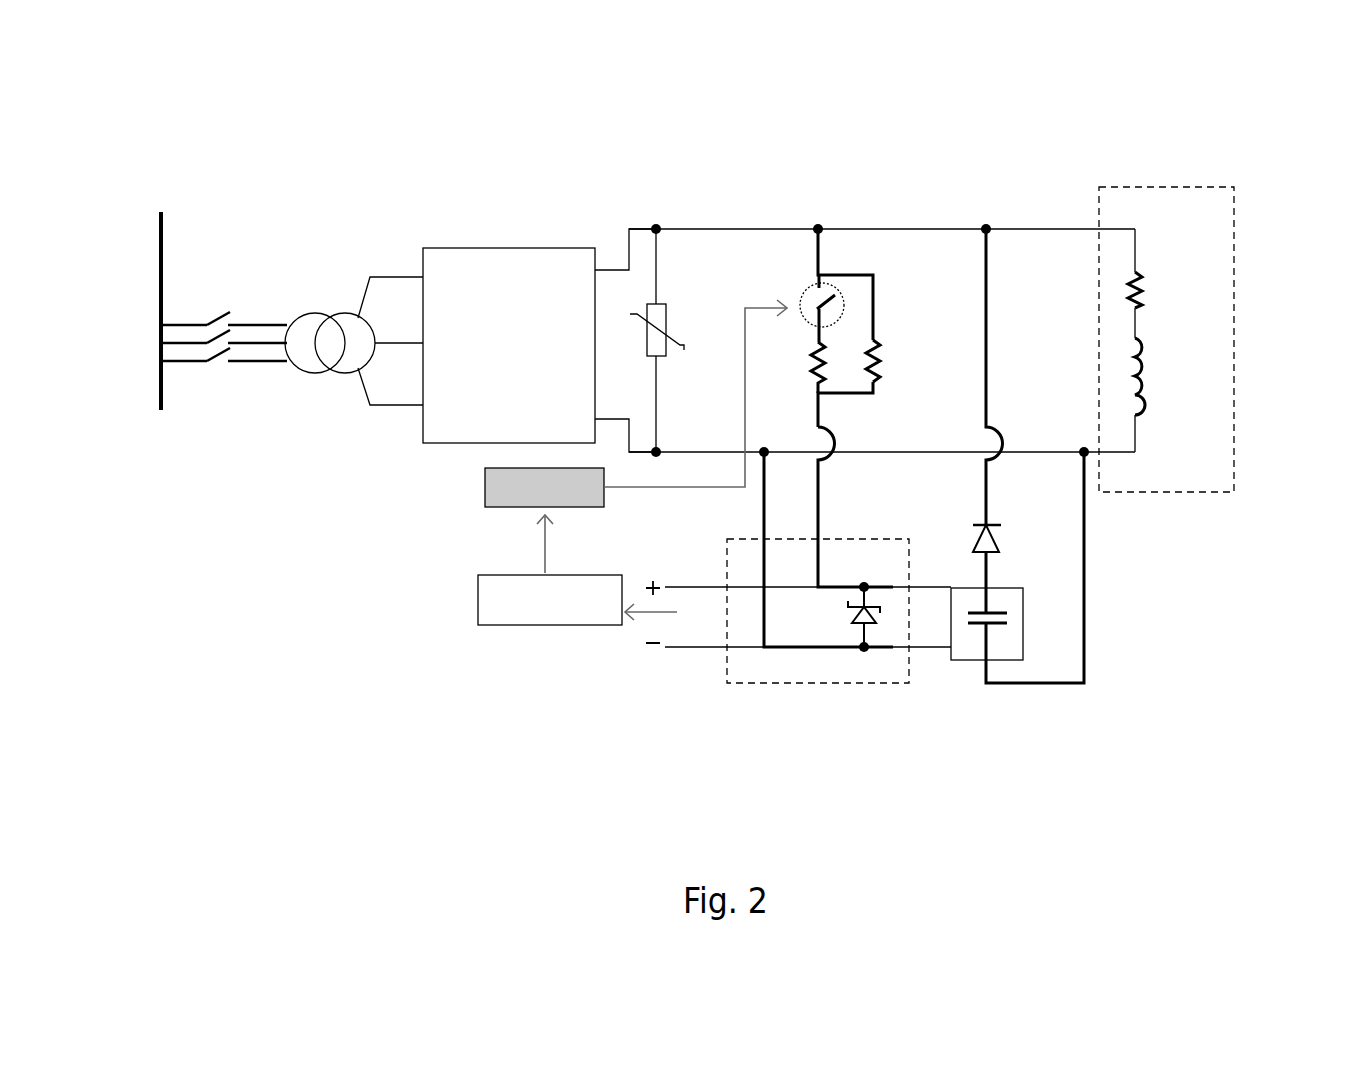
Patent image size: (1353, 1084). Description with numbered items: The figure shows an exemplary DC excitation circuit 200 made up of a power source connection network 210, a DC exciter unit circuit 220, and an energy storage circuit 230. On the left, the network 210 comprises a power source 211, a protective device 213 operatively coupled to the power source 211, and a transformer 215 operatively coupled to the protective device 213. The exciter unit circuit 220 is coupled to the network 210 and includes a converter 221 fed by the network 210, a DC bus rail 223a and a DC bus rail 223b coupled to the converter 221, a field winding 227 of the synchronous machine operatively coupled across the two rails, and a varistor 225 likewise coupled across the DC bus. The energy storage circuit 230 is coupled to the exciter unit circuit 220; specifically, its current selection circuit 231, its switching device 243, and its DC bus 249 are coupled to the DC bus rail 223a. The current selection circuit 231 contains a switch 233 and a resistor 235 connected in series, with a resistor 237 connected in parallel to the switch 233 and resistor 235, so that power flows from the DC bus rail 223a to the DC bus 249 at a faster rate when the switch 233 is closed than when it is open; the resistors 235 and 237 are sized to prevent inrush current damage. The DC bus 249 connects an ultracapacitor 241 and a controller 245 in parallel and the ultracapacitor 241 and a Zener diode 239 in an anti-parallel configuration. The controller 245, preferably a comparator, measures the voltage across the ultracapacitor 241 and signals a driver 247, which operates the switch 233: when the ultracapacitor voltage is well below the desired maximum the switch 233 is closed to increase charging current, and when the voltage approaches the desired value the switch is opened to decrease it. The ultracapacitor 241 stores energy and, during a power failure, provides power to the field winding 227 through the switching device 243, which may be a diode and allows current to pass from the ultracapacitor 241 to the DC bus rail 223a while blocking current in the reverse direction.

The DC excitation circuit 200 is at (1153, 679).
The power source connection network 210 is at (295, 414).
The power source 211 is at (163, 228).
The protective device 213 is at (218, 312).
The transformer 215 is at (326, 315).
The DC exciter unit circuit 220 is at (470, 207).
The converter 221 is at (527, 248).
The DC bus rail 223a is at (705, 229).
The DC bus rail 223b is at (669, 450).
The varistor 225 is at (668, 315).
The field winding 227 is at (1104, 187).
The energy storage circuit 230 is at (577, 686).
The current selection circuit 231 is at (899, 296).
The switch 233 is at (831, 302).
The resistor 235 is at (812, 353).
The resistor 237 is at (880, 350).
The Zener diode 239 is at (864, 652).
The ultracapacitor 241 is at (1024, 612).
The switching device 243 is at (1001, 545).
The controller 245 is at (502, 625).
The driver 247 is at (485, 504).
The DC bus 249 is at (689, 668).